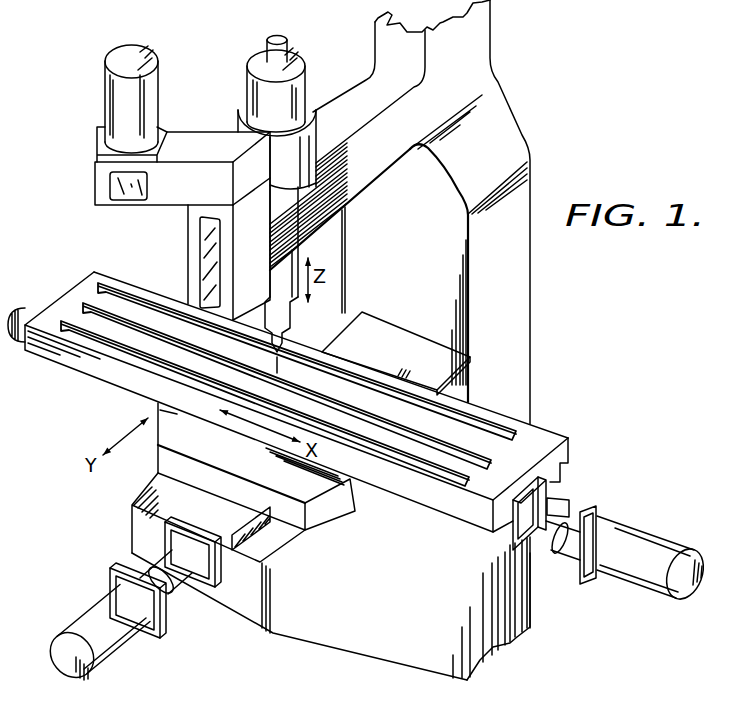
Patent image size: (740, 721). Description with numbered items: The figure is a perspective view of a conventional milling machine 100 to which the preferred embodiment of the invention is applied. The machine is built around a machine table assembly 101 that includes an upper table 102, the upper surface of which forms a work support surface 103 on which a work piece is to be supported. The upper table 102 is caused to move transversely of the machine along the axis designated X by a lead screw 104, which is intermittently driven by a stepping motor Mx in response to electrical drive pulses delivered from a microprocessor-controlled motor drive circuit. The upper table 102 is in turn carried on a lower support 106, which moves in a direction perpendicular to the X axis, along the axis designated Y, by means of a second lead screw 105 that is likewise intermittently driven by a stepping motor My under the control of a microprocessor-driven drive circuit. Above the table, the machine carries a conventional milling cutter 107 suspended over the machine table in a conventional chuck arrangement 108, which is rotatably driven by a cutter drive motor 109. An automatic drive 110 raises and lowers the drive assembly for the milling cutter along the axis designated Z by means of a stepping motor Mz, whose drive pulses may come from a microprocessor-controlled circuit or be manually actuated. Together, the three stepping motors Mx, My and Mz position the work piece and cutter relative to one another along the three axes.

The milling machine 100 is at (513, 97).
The machine table assembly 101 is at (128, 400).
The upper table 102 is at (550, 430).
The work support surface 103 is at (507, 457).
The lead screw 104 is at (565, 508).
The lead screw 105 is at (163, 542).
The lower support 106 is at (147, 470).
The milling cutter 107 is at (327, 352).
The chuck arrangement 108 is at (293, 305).
The cutter drive motor 109 is at (340, 63).
The automatic drive 110 is at (188, 228).
The stepping motor Mx is at (637, 547).
The stepping motor My is at (95, 613).
The stepping motor Mz is at (143, 97).